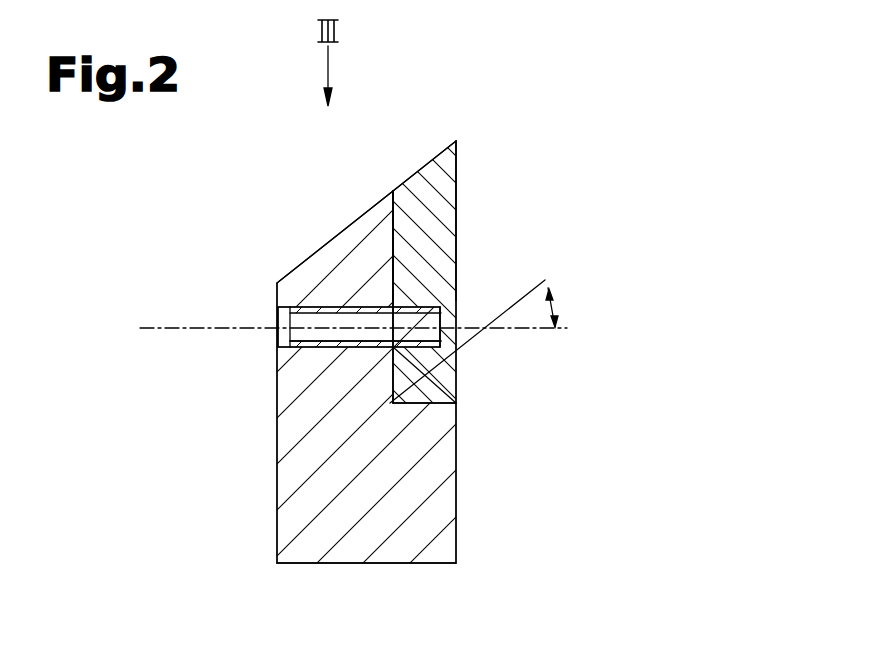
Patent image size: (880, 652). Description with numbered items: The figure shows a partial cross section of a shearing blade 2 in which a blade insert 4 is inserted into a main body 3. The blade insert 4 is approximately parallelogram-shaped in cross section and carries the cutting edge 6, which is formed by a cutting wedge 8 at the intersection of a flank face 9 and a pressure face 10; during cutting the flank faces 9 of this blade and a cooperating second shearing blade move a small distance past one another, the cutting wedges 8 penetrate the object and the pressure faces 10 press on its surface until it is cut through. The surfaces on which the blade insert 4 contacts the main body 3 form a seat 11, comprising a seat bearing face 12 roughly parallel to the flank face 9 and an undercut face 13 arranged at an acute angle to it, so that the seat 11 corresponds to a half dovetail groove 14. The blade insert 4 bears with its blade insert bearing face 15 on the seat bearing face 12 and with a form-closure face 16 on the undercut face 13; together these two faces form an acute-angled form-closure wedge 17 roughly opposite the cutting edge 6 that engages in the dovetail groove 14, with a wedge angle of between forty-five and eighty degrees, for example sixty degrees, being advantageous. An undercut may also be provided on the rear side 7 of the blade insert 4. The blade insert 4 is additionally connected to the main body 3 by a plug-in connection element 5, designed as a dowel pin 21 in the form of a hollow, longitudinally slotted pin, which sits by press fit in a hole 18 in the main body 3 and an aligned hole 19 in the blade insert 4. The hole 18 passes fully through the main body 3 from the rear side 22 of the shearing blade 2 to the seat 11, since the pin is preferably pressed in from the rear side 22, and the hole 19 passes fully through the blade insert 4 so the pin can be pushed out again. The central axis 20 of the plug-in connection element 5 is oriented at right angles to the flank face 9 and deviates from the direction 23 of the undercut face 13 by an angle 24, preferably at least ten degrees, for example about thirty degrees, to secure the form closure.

The shearing blade 2 is at (570, 125).
The main body 3 is at (285, 480).
The blade insert 4 is at (458, 197).
The plug-in connection element 5 is at (277, 310).
The cutting edge 6 is at (456, 141).
The rear side 7 is at (428, 426).
The cutting wedge 8 is at (457, 103).
The flank face 9 is at (458, 172).
The pressure face 10 is at (397, 218).
The seat 11 is at (375, 390).
The seat bearing face 12 is at (396, 222).
The undercut face 13 is at (422, 363).
The half dovetail groove 14 is at (379, 388).
The blade insert bearing face 15 is at (390, 235).
The form-closure face 16 is at (438, 350).
The form-closure wedge 17 is at (413, 403).
The hole 18 is at (277, 333).
The hole 19 is at (456, 355).
The central axis 20 is at (256, 323).
The dowel pin 21 is at (277, 310).
The rear side 22 is at (277, 398).
The direction 23 is at (517, 298).
The angle 24 is at (558, 302).